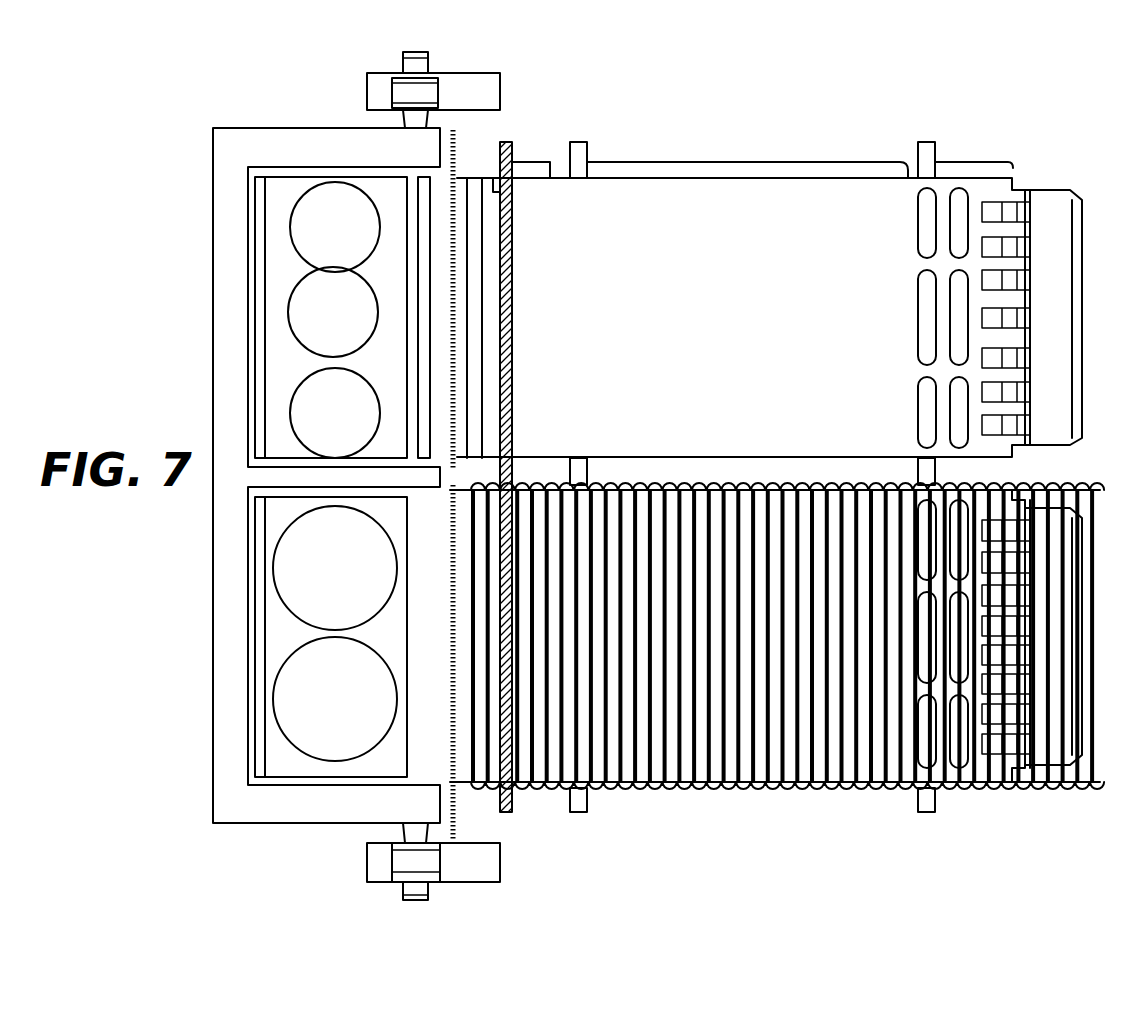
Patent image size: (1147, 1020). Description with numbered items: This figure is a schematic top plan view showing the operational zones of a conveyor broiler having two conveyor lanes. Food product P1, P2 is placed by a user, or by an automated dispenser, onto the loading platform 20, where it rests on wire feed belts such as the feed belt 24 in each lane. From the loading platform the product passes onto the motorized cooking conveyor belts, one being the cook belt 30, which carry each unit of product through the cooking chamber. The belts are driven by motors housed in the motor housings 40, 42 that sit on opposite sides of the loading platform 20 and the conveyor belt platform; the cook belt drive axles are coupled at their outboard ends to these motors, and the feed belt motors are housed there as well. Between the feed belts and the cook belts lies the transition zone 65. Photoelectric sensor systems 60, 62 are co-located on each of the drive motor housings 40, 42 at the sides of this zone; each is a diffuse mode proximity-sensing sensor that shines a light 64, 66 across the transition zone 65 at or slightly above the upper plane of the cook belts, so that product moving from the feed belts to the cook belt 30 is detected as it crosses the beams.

The loading platform 20 is at (278, 200).
The feed belt 24 is at (288, 762).
The cook belt 30 is at (660, 742).
The motor housing 40 is at (388, 72).
The motor housing 42 is at (385, 885).
The photoelectric sensor system 60 is at (457, 97).
The photoelectric sensor system 62 is at (445, 858).
The light 64 is at (453, 250).
The transition zone 65 is at (465, 115).
The light 66 is at (450, 677).
The product P1 is at (317, 420).
The product P2 is at (317, 723).